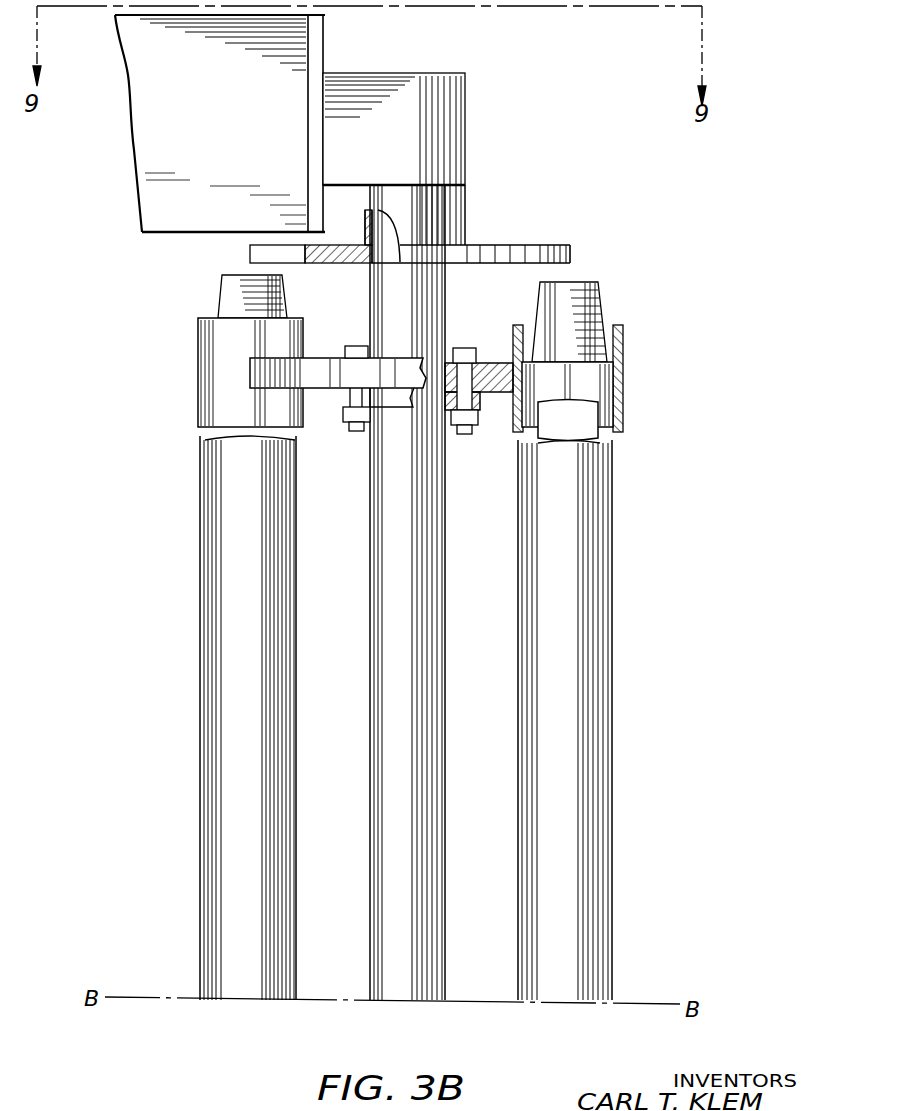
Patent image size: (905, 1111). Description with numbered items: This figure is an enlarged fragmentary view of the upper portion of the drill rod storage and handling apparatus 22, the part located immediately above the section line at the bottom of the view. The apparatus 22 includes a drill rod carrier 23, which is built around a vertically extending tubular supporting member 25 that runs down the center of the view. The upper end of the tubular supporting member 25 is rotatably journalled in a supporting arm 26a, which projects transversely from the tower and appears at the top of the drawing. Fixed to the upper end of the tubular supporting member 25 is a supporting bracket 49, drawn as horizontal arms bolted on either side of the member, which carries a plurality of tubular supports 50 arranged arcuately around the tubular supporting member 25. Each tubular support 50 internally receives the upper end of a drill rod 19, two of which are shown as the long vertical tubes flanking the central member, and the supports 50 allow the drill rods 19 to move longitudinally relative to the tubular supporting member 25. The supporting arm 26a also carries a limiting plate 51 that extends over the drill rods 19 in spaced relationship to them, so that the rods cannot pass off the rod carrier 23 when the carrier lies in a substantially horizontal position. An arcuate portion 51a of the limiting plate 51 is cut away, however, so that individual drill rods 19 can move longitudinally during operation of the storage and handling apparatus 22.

The drill rod storage and handling apparatus 22 is at (762, 106).
The drill rod carrier 23 is at (585, 174).
The supporting arm 26a is at (445, 130).
The limiting plate 51 is at (573, 255).
The arcuate portion 51a is at (268, 250).
The tubular support 50 is at (240, 363).
The supporting bracket 49 is at (331, 358).
The tubular supporting member 25 is at (420, 601).
The drill rod 19 is at (252, 715).